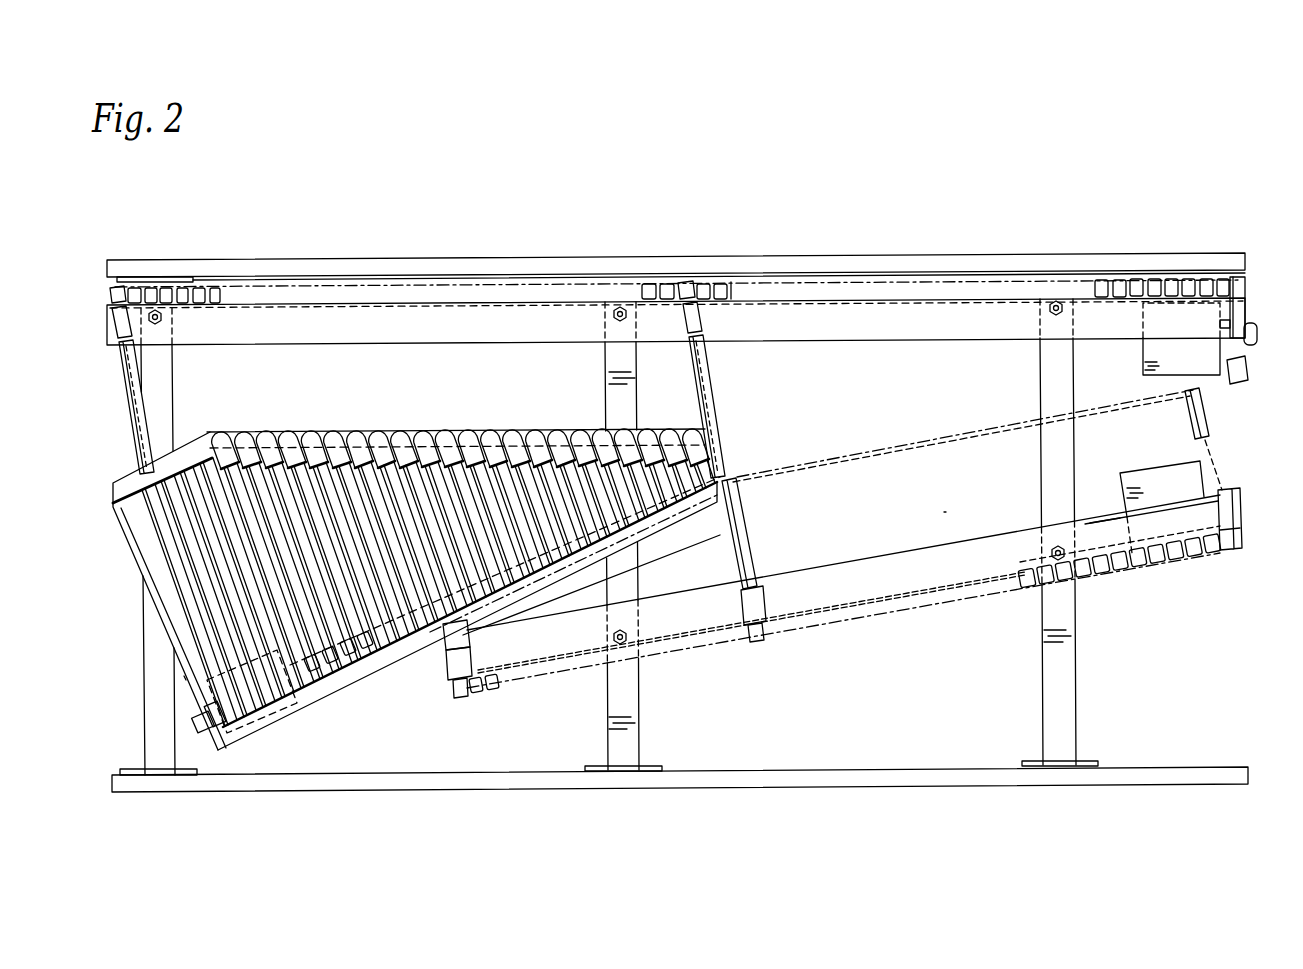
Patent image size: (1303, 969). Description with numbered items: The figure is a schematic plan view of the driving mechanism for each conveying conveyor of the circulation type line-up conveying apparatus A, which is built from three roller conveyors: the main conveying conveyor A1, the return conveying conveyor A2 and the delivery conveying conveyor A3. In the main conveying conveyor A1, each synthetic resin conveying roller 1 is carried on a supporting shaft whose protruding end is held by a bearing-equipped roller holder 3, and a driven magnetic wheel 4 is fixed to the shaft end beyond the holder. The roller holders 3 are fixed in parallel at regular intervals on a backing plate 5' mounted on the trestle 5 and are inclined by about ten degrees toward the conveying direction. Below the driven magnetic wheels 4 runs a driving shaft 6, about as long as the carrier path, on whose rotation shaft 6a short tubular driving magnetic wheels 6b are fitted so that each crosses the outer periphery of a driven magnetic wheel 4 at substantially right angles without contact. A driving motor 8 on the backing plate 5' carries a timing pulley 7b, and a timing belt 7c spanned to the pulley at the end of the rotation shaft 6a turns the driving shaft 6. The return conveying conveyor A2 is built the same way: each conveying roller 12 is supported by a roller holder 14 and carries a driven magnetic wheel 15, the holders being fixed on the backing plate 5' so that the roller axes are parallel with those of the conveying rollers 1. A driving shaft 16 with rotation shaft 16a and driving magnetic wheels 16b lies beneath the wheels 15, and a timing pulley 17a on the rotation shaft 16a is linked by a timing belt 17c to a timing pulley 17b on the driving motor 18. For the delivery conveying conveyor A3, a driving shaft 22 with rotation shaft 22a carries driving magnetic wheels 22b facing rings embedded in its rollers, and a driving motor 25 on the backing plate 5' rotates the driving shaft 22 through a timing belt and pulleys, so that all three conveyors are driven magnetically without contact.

The conveyor line A is at (905, 254).
The main conveying conveyor A1 is at (124, 413).
The return conveying conveyor A2 is at (945, 510).
The delivery conveying conveyor A3 is at (176, 678).
The conveying roller 1 is at (138, 386).
The roller holder 3 is at (132, 322).
The driven magnetic wheel 4 is at (118, 287).
The trestle 5 is at (680, 545).
The backing plate 5' is at (684, 494).
The driving shaft 6 is at (678, 234).
The rotation shaft 6a is at (1114, 251).
The driving magnetic wheel 6b is at (205, 288).
The timing pulley 7b is at (1207, 360).
The timing belt 7c is at (1240, 274).
The driving motor 8 is at (1148, 352).
The conveying roller 12 is at (740, 497).
The roller holder 14 is at (752, 612).
The driven magnetic wheel 15 is at (765, 638).
The driving shaft 16 is at (849, 644).
The rotation shaft 16a is at (1100, 575).
The driving magnetic wheel 16b is at (1165, 565).
The timing pulley 17a is at (1238, 550).
The timing pulley 17b is at (1230, 500).
The timing belt 17c is at (1120, 521).
The driving motor 18 is at (1158, 486).
The driving shaft 22 is at (456, 667).
The rotation shaft 22a is at (340, 700).
The driving magnetic wheel 22b is at (354, 696).
The driving motor 25 is at (257, 732).